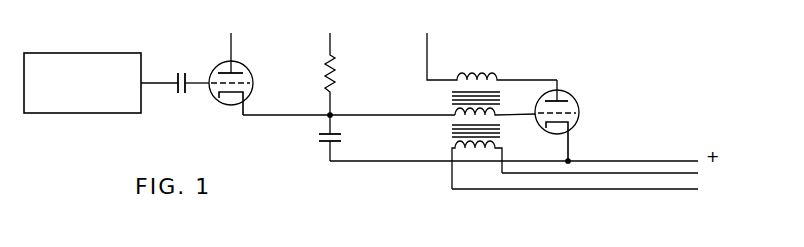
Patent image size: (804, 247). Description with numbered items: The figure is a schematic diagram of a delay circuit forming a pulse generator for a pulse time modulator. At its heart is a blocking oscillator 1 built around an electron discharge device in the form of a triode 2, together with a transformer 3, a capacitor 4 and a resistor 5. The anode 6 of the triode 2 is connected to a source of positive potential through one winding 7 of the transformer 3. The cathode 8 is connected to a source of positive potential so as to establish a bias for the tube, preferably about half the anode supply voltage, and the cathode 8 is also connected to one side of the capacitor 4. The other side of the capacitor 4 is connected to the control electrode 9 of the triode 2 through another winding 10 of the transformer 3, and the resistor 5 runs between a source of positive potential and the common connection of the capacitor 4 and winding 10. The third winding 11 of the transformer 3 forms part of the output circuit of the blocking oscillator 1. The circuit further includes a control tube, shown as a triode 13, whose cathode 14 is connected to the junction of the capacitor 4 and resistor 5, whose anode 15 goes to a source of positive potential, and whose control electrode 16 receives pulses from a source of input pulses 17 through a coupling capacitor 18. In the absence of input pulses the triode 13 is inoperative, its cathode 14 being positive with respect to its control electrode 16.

The blocking oscillator 1 is at (354, 104).
The triode 2 is at (606, 101).
The transformer 3 is at (532, 63).
The capacitor 4 is at (320, 139).
The resistor 5 is at (326, 70).
The anode 6 is at (566, 99).
The winding 7 is at (479, 73).
The cathode 8 is at (570, 127).
The control electrode 9 is at (577, 112).
The winding 10 is at (455, 117).
The third winding 11 is at (503, 148).
The triode 13 is at (209, 67).
The cathode 14 is at (230, 95).
The anode 15 is at (243, 70).
The control electrode 16 is at (251, 86).
The source of input pulses 17 is at (112, 113).
The capacitor 18 is at (182, 95).